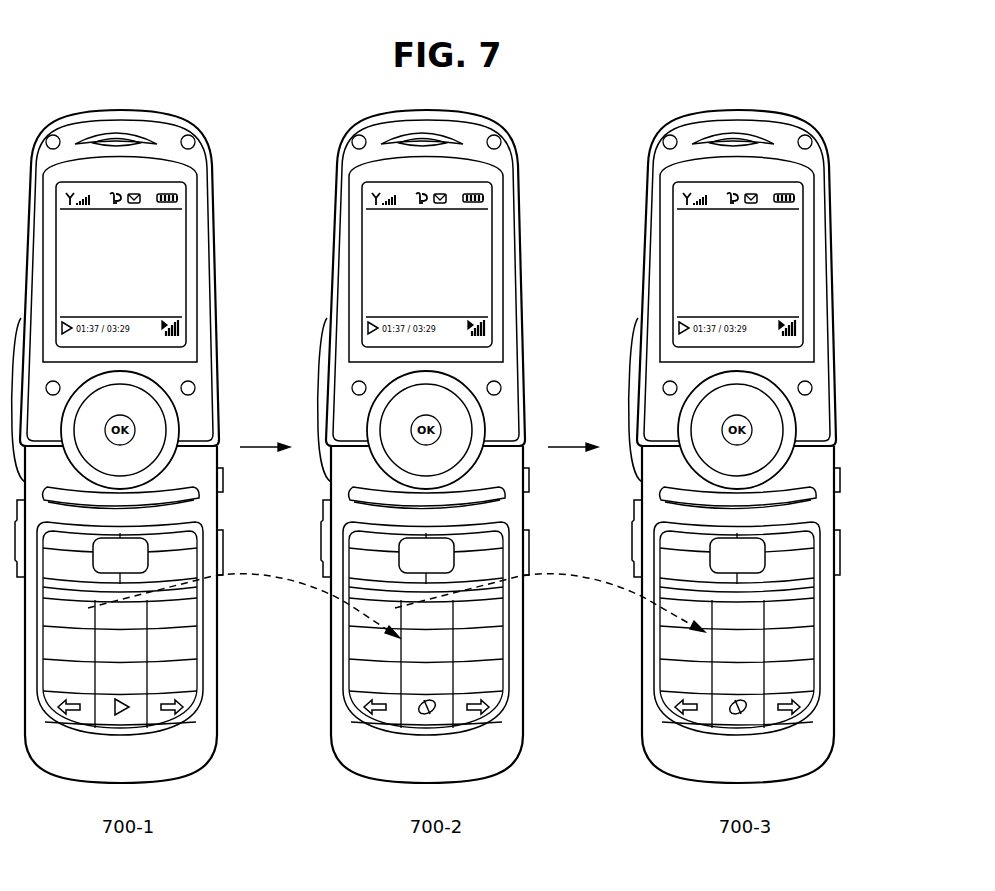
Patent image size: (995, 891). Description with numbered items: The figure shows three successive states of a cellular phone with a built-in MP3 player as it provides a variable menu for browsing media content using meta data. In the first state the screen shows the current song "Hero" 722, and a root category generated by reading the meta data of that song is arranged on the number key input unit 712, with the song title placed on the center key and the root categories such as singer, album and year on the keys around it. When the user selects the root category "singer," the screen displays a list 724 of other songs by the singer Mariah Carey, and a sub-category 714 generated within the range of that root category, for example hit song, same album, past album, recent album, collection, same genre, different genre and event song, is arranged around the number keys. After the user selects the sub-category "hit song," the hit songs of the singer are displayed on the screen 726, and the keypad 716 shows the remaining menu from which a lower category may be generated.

The current song display 722 is at (189, 228).
The list of other songs by the singer 724 is at (474, 264).
The hit song display 726 is at (781, 264).
The number key input unit 712 is at (208, 640).
The sub-category 714 is at (468, 628).
The keypad with search option keys 716 is at (777, 628).